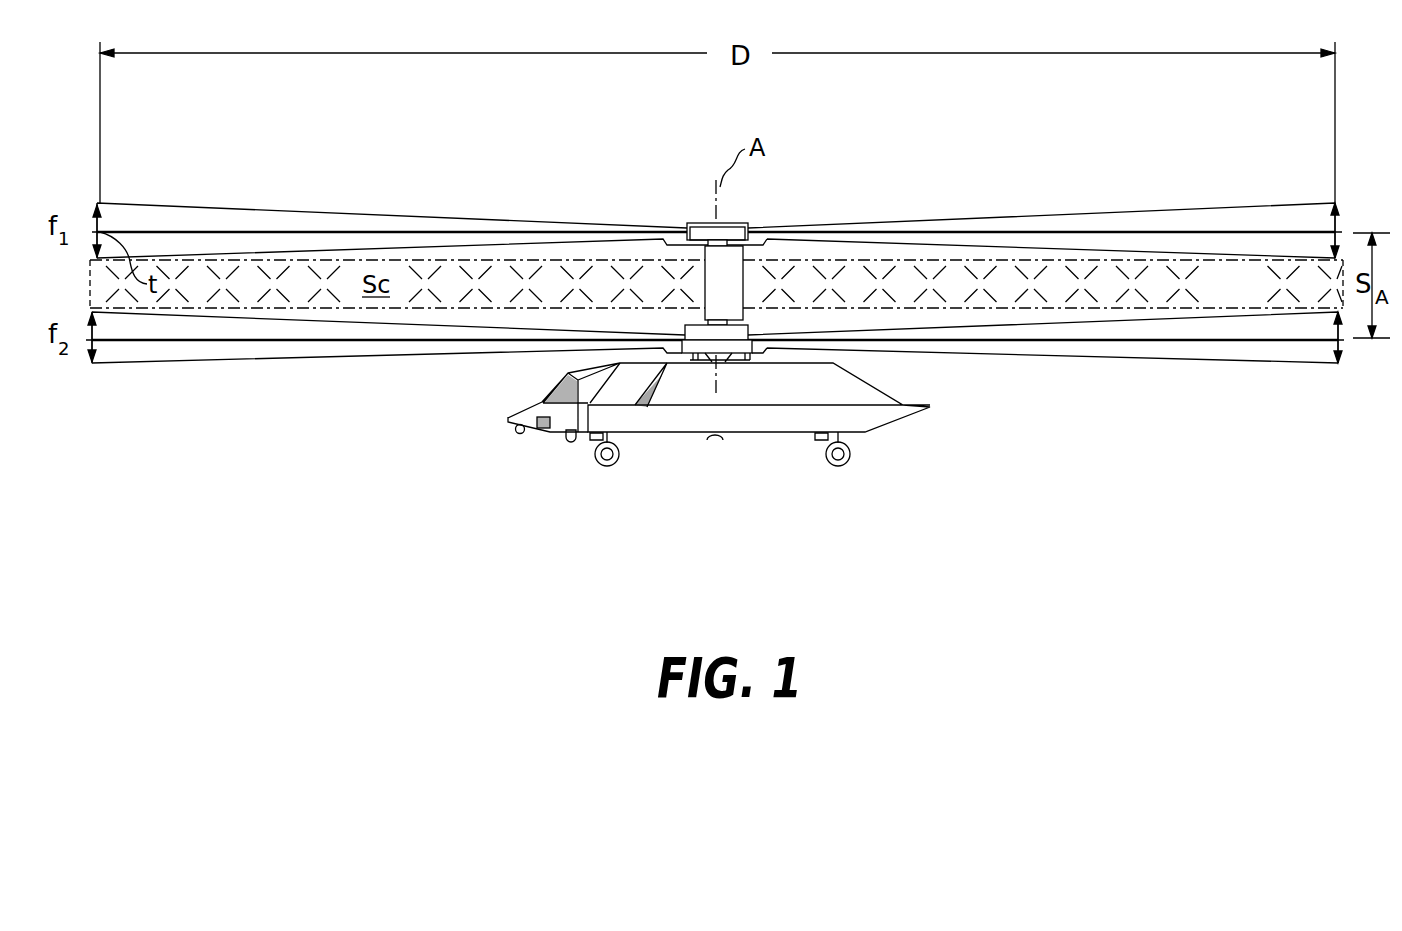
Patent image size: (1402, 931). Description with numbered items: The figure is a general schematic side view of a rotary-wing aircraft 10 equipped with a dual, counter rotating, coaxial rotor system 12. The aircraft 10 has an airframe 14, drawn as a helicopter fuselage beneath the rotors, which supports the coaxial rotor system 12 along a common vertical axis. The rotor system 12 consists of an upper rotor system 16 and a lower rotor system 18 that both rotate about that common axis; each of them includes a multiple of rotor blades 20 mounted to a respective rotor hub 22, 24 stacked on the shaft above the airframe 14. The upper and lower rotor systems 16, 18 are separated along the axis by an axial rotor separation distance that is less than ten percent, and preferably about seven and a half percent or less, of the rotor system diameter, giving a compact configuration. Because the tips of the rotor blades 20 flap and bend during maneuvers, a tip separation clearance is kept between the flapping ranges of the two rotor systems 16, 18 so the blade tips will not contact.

The rotary-wing aircraft 10 is at (1130, 173).
The coaxial rotor system 12 is at (783, 218).
The airframe 14 is at (755, 423).
The upper rotor system 16 is at (680, 221).
The lower rotor system 18 is at (748, 320).
The rotor blades 20 is at (1140, 218).
The rotor hub 22 is at (740, 232).
The rotor hub 24 is at (692, 332).